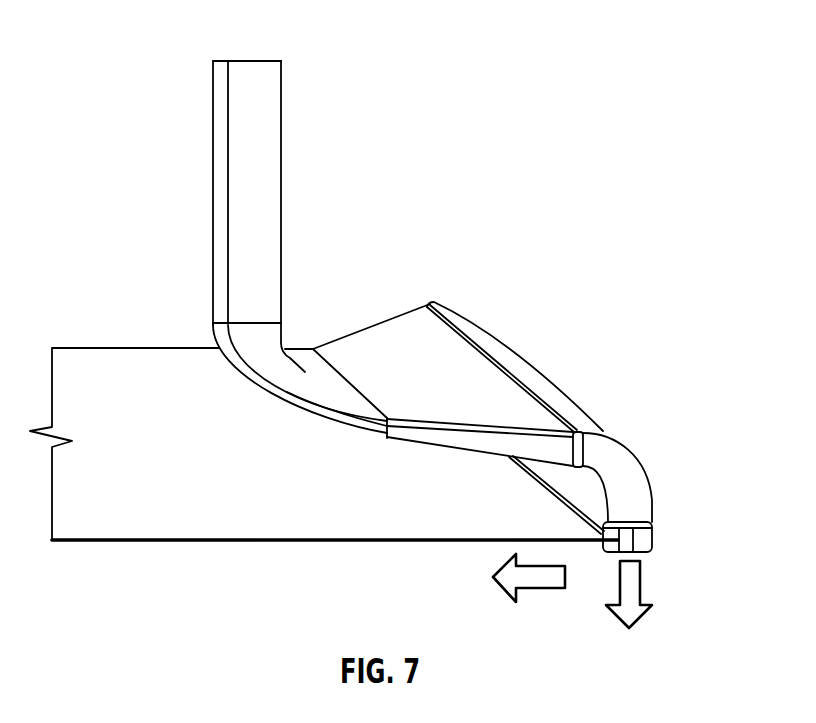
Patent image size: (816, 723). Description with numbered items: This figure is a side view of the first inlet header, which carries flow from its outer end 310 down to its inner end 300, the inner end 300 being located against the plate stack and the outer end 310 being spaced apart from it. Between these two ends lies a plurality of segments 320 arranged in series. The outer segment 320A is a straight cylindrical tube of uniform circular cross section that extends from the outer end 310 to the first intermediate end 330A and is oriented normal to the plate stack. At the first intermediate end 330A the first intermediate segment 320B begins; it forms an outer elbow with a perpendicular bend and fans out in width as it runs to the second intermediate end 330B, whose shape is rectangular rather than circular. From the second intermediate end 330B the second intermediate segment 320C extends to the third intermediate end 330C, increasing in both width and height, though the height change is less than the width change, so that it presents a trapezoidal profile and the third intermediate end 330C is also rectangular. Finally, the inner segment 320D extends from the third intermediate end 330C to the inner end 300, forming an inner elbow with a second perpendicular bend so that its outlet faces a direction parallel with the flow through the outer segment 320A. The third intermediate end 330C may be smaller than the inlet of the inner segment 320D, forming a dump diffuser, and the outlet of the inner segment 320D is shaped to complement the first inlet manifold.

The inner end 300 is at (655, 515).
The outer end 310 is at (248, 61).
The plurality of segments 320 is at (212, 160).
The outer segment 320A is at (282, 107).
The first intermediate segment 320B is at (226, 323).
The second intermediate segment 320C is at (443, 342).
The inner segment 320D is at (645, 470).
The first intermediate end 330A is at (280, 245).
The second intermediate end 330B is at (290, 358).
The third intermediate end 330C is at (581, 430).